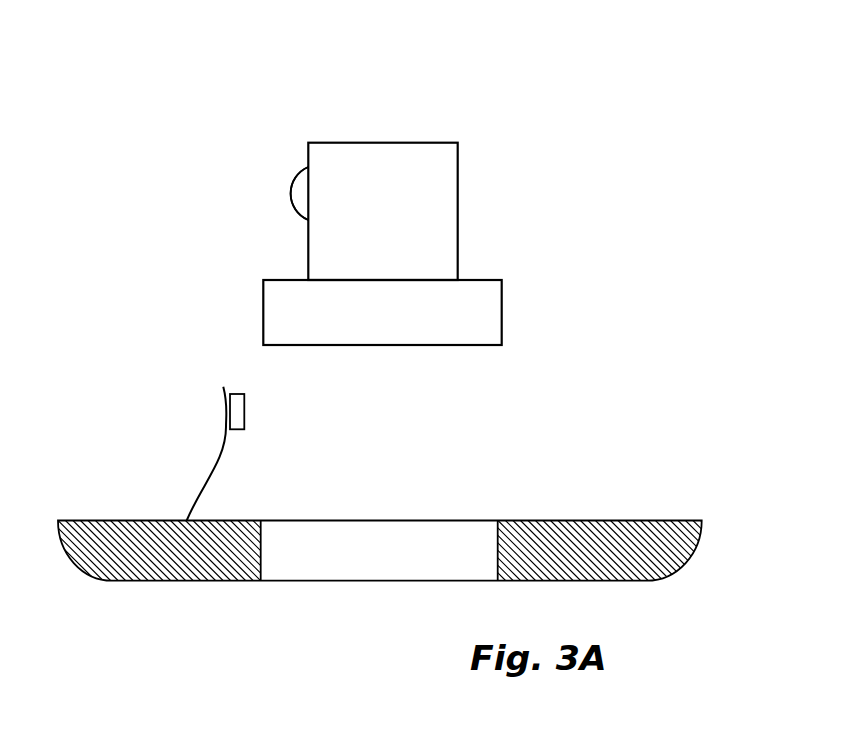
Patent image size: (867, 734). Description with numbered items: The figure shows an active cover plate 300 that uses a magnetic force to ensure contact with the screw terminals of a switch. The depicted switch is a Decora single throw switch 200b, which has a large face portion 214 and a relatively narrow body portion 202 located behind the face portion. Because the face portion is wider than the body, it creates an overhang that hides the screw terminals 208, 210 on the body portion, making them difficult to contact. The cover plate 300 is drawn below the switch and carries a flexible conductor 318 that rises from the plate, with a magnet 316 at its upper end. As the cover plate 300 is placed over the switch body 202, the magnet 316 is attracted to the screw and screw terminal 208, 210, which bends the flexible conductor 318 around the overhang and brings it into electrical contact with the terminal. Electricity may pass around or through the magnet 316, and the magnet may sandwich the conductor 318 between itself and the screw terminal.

The Decora single throw switch 200b is at (602, 60).
The body portion 202 is at (411, 220).
The screw terminal 208 is at (293, 191).
The screw terminal 210 is at (300, 193).
The face portion 214 is at (485, 308).
The active cover plate 300 is at (586, 530).
The magnet 316 is at (242, 413).
The flexible conductor 318 is at (212, 467).